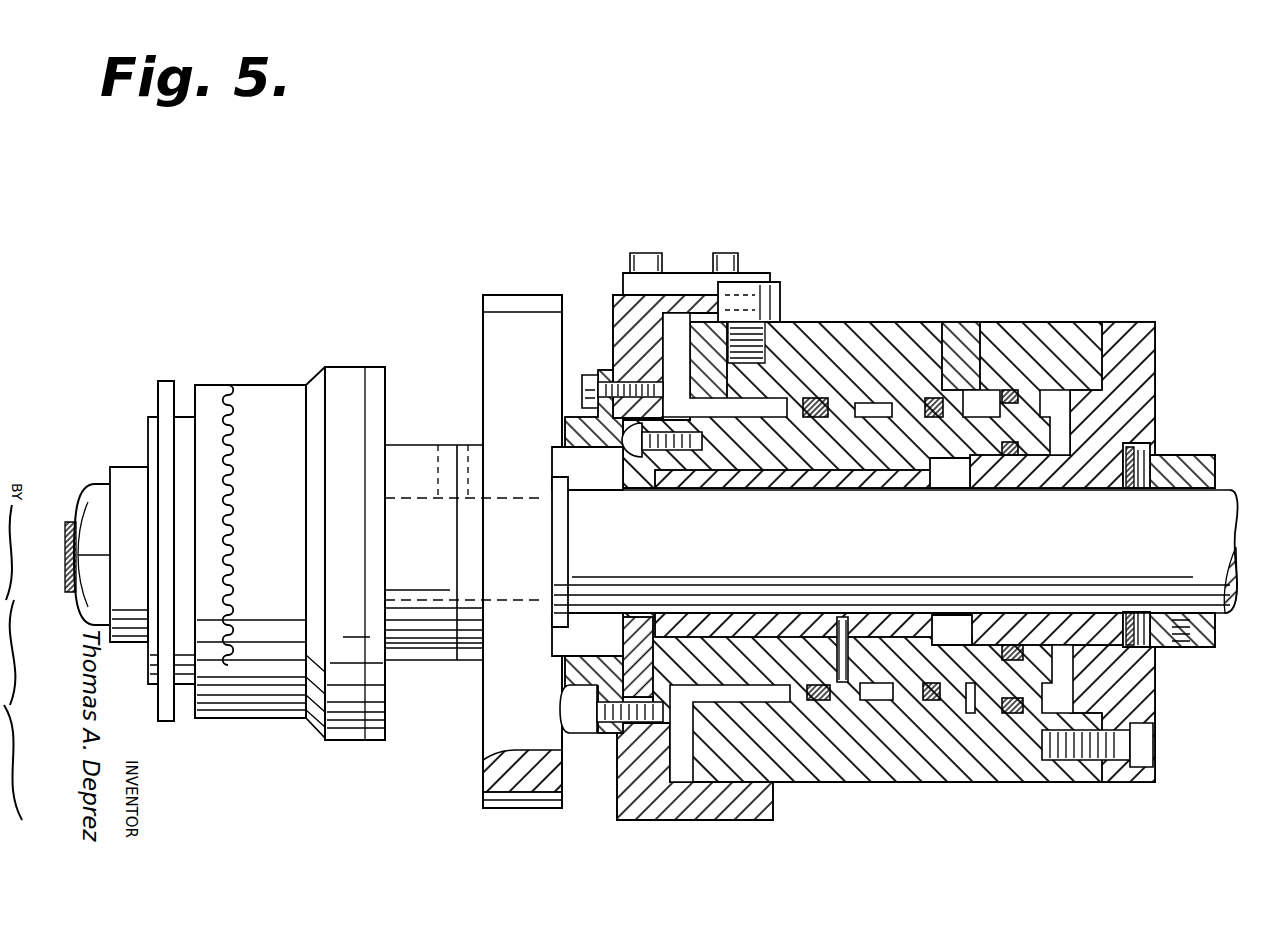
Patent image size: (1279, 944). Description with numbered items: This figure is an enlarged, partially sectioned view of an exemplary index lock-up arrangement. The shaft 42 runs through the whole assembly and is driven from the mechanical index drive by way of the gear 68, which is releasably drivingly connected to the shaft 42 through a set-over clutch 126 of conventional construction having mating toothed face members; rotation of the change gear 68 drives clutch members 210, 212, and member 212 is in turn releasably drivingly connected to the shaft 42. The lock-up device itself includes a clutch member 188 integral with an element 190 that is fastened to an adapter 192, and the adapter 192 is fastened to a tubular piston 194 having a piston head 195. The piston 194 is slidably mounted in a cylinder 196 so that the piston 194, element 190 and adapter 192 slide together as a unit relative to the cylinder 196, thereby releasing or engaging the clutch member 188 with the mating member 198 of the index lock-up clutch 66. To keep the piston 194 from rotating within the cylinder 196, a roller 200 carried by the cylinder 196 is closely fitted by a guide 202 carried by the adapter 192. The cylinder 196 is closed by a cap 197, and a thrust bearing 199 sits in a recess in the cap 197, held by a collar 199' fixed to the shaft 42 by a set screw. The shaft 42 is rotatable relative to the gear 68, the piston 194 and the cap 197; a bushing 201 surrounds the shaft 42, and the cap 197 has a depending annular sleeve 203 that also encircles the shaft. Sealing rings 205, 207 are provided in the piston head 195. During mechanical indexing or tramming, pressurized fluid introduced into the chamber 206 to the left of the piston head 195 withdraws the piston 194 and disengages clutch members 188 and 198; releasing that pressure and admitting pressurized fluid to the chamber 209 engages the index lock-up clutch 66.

The shaft 42 is at (76, 497).
The clutch 66 is at (596, 375).
The gear 68 is at (483, 805).
The set-over clutch 126 is at (256, 362).
The clutch member 188 is at (588, 700).
The element 190 is at (607, 753).
The adapter 192 is at (642, 823).
The tubular piston 194 is at (749, 489).
The piston head 195 is at (983, 397).
The cylinder 196 is at (838, 420).
The cap 197 is at (1148, 363).
The clutch member 198 is at (570, 415).
The thrust bearing 199 is at (1168, 527).
The collar 199' is at (1211, 536).
The roller 200 is at (782, 303).
The bushing 201 is at (836, 490).
The guide 202 is at (771, 276).
The depending annular sleeve 203 is at (986, 492).
The sealing ring 205 is at (1017, 390).
The chamber 206 is at (966, 701).
The sealing ring 207 is at (1018, 646).
The chamber 209 is at (1057, 397).
The clutch member 210 is at (246, 719).
The clutch member 212 is at (213, 719).